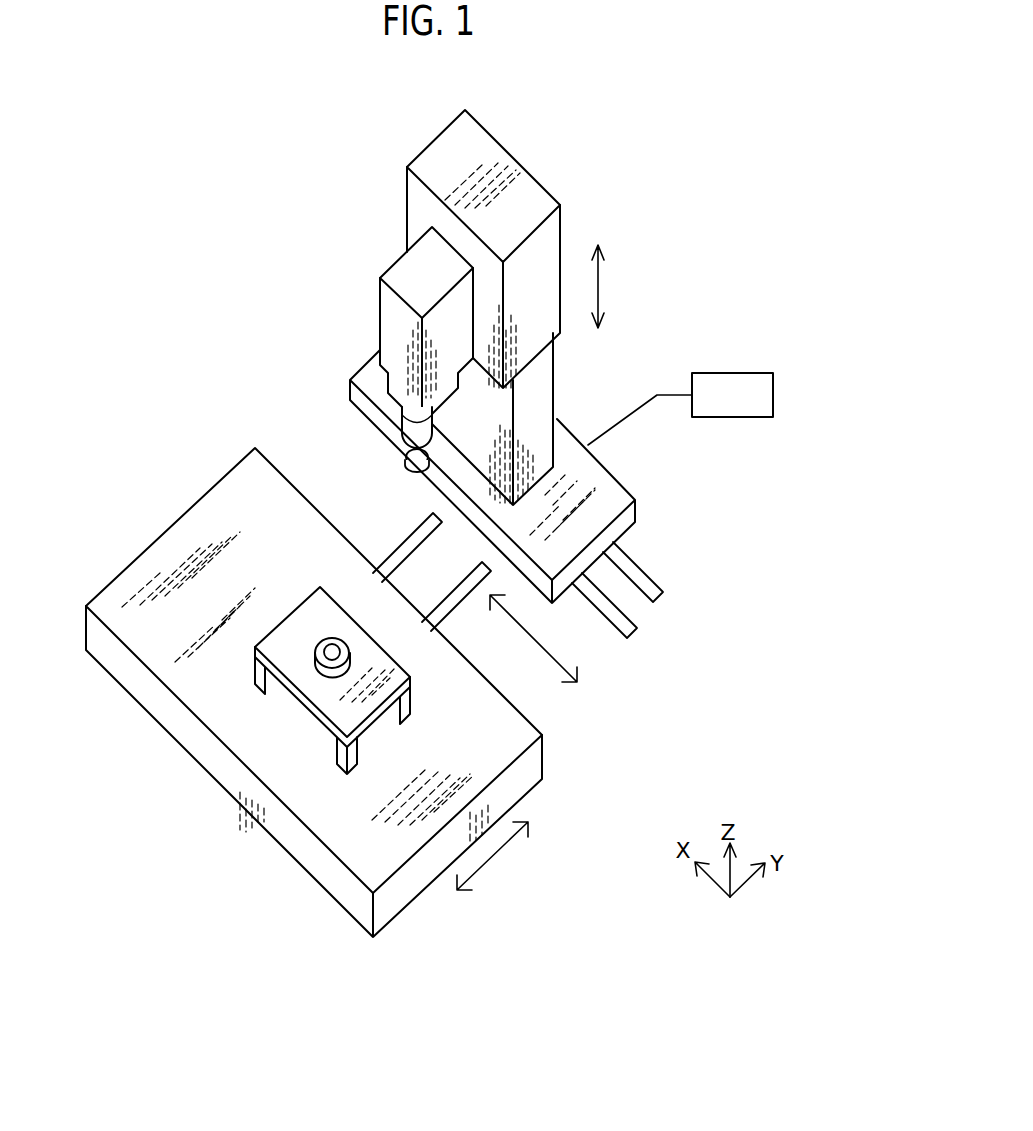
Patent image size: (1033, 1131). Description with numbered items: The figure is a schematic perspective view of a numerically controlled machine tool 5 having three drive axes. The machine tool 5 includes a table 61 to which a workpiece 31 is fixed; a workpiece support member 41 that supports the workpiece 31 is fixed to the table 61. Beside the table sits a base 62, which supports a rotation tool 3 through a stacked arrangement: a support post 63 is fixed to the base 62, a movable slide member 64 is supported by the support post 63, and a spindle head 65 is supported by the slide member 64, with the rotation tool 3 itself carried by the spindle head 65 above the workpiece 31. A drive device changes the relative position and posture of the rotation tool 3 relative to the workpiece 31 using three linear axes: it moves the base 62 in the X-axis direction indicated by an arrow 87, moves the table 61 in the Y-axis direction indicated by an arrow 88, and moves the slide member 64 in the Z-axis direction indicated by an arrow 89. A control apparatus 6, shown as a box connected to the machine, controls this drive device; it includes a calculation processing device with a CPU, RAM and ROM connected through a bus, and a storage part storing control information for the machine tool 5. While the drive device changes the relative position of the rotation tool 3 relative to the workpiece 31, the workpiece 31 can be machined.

The machine tool 5 is at (607, 138).
The rotation tool 3 is at (413, 432).
The control apparatus 6 is at (735, 373).
The workpiece 31 is at (320, 668).
The workpiece support member 41 is at (263, 662).
The table 61 is at (332, 877).
The base 62 is at (593, 487).
The support post 63 is at (556, 392).
The slide member 64 is at (553, 235).
The spindle head 65 is at (378, 315).
The arrow 87 is at (553, 658).
The arrow 88 is at (497, 853).
The arrow 89 is at (602, 283).